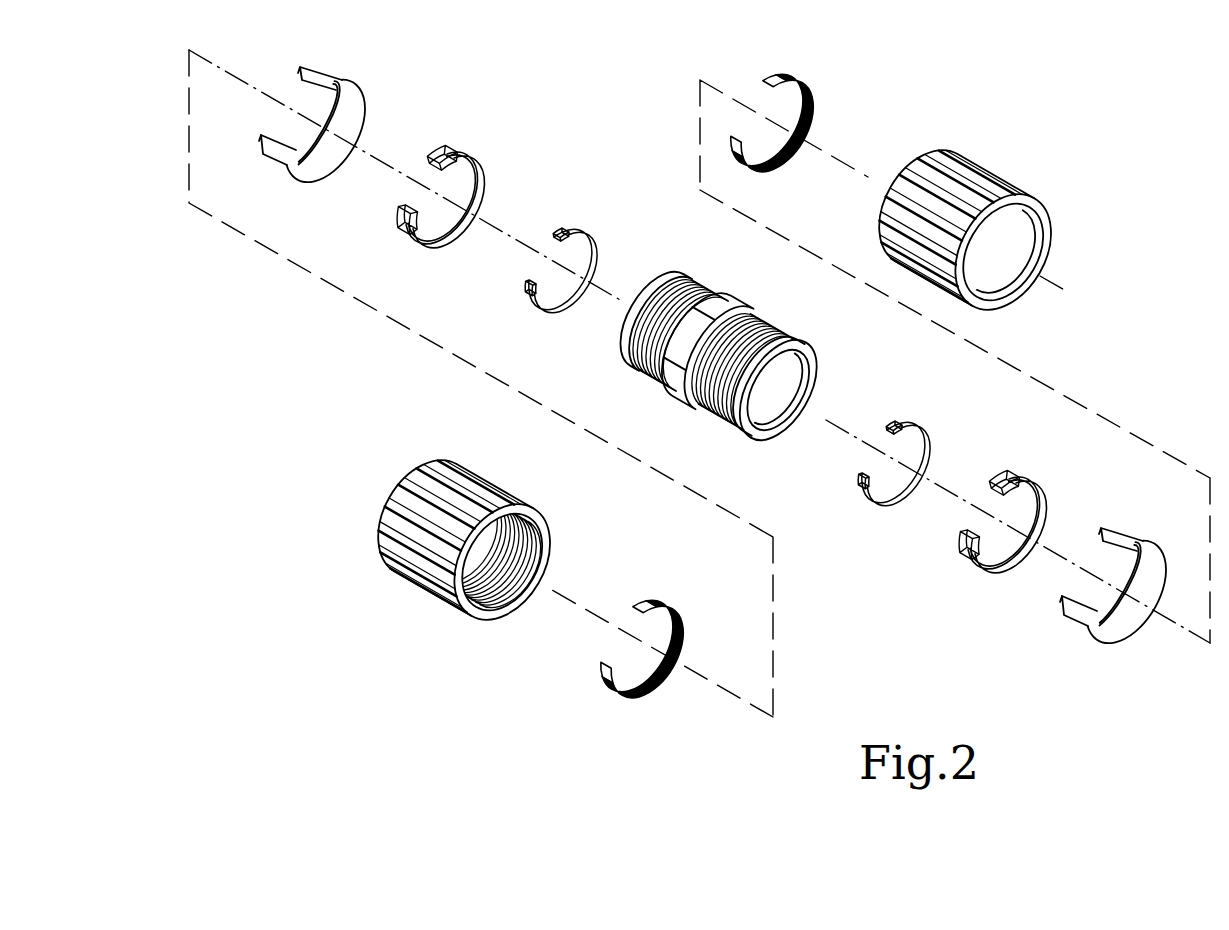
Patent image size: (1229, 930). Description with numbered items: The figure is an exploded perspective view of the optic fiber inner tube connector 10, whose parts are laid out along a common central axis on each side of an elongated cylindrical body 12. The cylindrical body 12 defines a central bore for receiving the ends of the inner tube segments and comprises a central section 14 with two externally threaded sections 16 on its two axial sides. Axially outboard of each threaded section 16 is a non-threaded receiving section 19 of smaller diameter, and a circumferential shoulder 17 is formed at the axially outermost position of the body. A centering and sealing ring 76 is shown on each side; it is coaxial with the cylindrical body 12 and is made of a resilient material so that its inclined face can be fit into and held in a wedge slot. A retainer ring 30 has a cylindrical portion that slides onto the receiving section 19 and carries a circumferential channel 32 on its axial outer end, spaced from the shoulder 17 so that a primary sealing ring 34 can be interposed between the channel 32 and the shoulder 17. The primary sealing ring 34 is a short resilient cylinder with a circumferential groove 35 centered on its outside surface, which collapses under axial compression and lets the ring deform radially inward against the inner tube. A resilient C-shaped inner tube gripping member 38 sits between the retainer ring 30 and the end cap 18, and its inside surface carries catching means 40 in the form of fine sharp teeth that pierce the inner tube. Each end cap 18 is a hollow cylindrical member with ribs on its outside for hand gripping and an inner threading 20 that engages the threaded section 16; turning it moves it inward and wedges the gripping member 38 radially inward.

The connector 10 is at (944, 83).
The cylindrical body 12 is at (672, 413).
The central section 14 is at (737, 308).
The externally threaded section 16 is at (762, 317).
The circumferential shoulder 17 is at (742, 415).
The end cap 18 is at (412, 522).
The non-threaded receiving section 19 is at (788, 343).
The inner threading 20 is at (504, 565).
The retainer ring 30 is at (1142, 546).
The circumferential channel 32 is at (1089, 613).
The primary sealing ring 34 is at (973, 576).
The circumferential groove 35 is at (1008, 466).
The inner tube gripping member 38 is at (671, 590).
The inner tube catching means 40 is at (683, 642).
The centering and sealing ring 76 is at (927, 419).